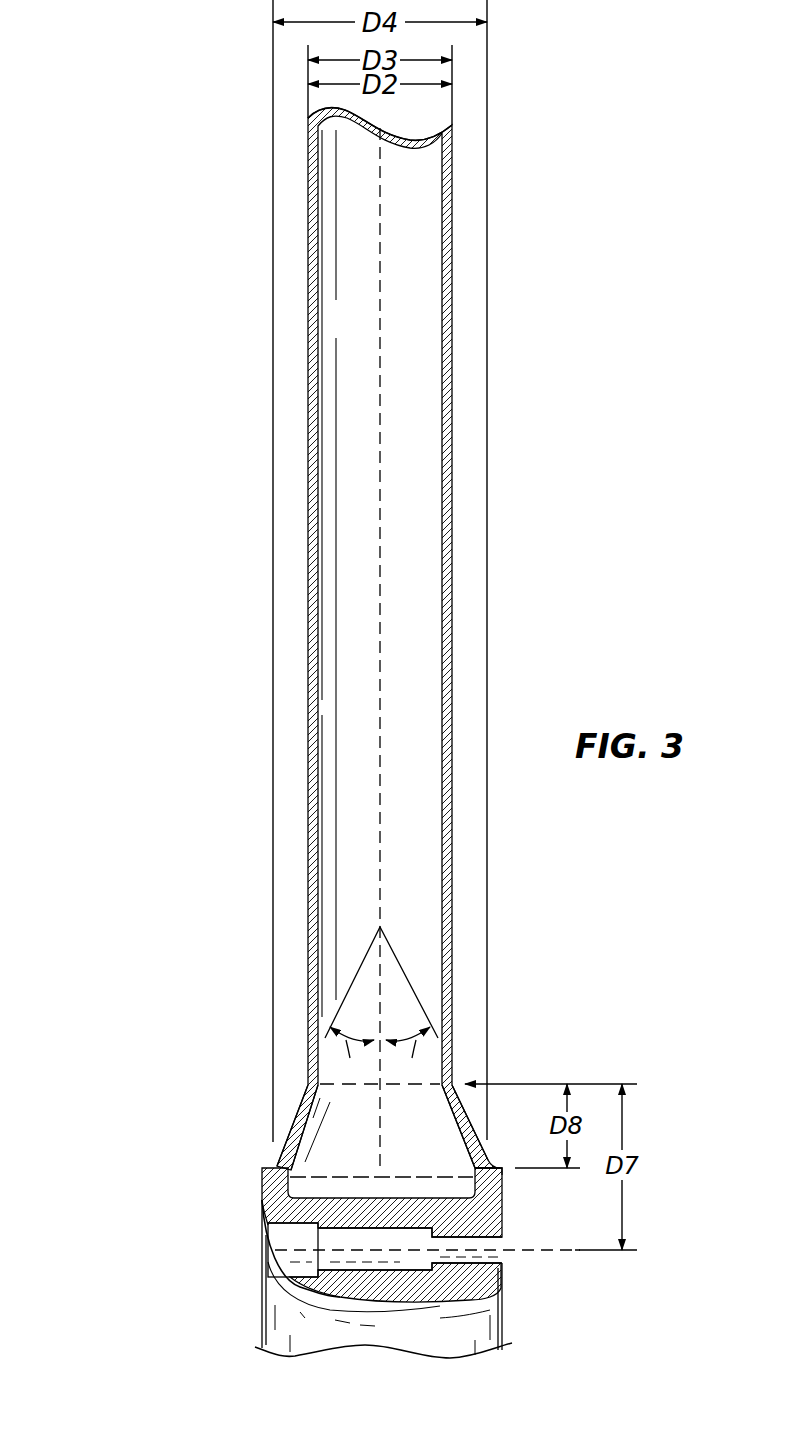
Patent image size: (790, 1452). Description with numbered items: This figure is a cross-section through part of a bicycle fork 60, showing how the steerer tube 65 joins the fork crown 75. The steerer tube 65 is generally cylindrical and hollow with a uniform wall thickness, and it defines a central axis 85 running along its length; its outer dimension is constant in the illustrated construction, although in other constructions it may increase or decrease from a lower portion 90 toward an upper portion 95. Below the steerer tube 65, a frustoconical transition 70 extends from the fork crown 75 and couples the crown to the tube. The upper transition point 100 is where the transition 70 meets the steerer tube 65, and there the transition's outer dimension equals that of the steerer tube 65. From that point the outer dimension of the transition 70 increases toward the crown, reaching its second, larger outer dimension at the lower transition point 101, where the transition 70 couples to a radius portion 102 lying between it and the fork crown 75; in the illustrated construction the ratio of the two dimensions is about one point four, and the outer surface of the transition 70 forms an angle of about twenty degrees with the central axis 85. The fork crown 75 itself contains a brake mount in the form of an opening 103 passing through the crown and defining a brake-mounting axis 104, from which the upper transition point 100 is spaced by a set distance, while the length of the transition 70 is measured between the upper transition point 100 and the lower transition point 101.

The fork 60 is at (152, 680).
The steerer tube 65 is at (452, 435).
The transition 70 is at (455, 1100).
The fork crown 75 is at (262, 1266).
The central axis 85 is at (378, 285).
The lower portion 90 is at (308, 800).
The upper portion 95 is at (452, 160).
The upper transition point 100 is at (305, 1085).
The lower transition point 101 is at (277, 1166).
The radius portion 102 is at (488, 1165).
The opening 103 is at (292, 1238).
The brake-mounting axis 104 is at (532, 1252).